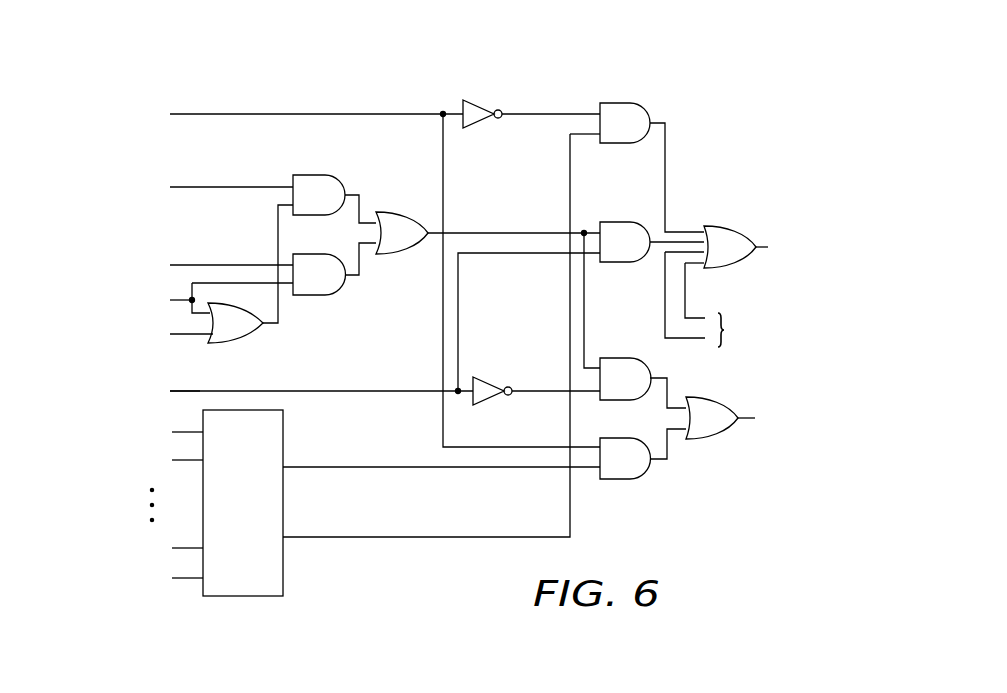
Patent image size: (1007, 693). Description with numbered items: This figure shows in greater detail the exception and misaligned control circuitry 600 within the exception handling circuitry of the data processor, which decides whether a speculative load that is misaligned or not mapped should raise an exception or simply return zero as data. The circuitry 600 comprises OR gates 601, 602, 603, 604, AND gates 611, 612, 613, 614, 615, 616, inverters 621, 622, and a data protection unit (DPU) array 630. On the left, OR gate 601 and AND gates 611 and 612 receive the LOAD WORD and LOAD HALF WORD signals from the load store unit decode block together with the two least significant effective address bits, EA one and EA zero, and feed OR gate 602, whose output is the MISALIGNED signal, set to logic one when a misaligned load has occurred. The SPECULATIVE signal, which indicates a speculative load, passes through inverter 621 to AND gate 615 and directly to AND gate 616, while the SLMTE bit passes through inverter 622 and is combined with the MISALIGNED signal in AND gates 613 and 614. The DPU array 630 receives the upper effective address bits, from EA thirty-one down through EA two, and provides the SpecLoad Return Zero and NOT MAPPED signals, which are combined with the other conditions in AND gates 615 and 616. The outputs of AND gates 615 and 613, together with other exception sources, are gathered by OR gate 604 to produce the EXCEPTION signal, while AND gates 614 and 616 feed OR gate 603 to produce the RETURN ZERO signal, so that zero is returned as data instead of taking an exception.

The exception and misaligned control circuitry 600 is at (755, 95).
The OR gate 601 is at (240, 344).
The OR gate 602 is at (394, 213).
The OR gate 603 is at (712, 440).
The OR gate 604 is at (737, 228).
The AND gate 611 is at (317, 296).
The AND gate 612 is at (316, 175).
The AND gate 613 is at (625, 222).
The AND gate 614 is at (627, 358).
The AND gate 615 is at (625, 103).
The AND gate 616 is at (627, 480).
The inverter 621 is at (480, 101).
The inverter 622 is at (490, 377).
The data protection unit (DPU) array 630 is at (244, 597).